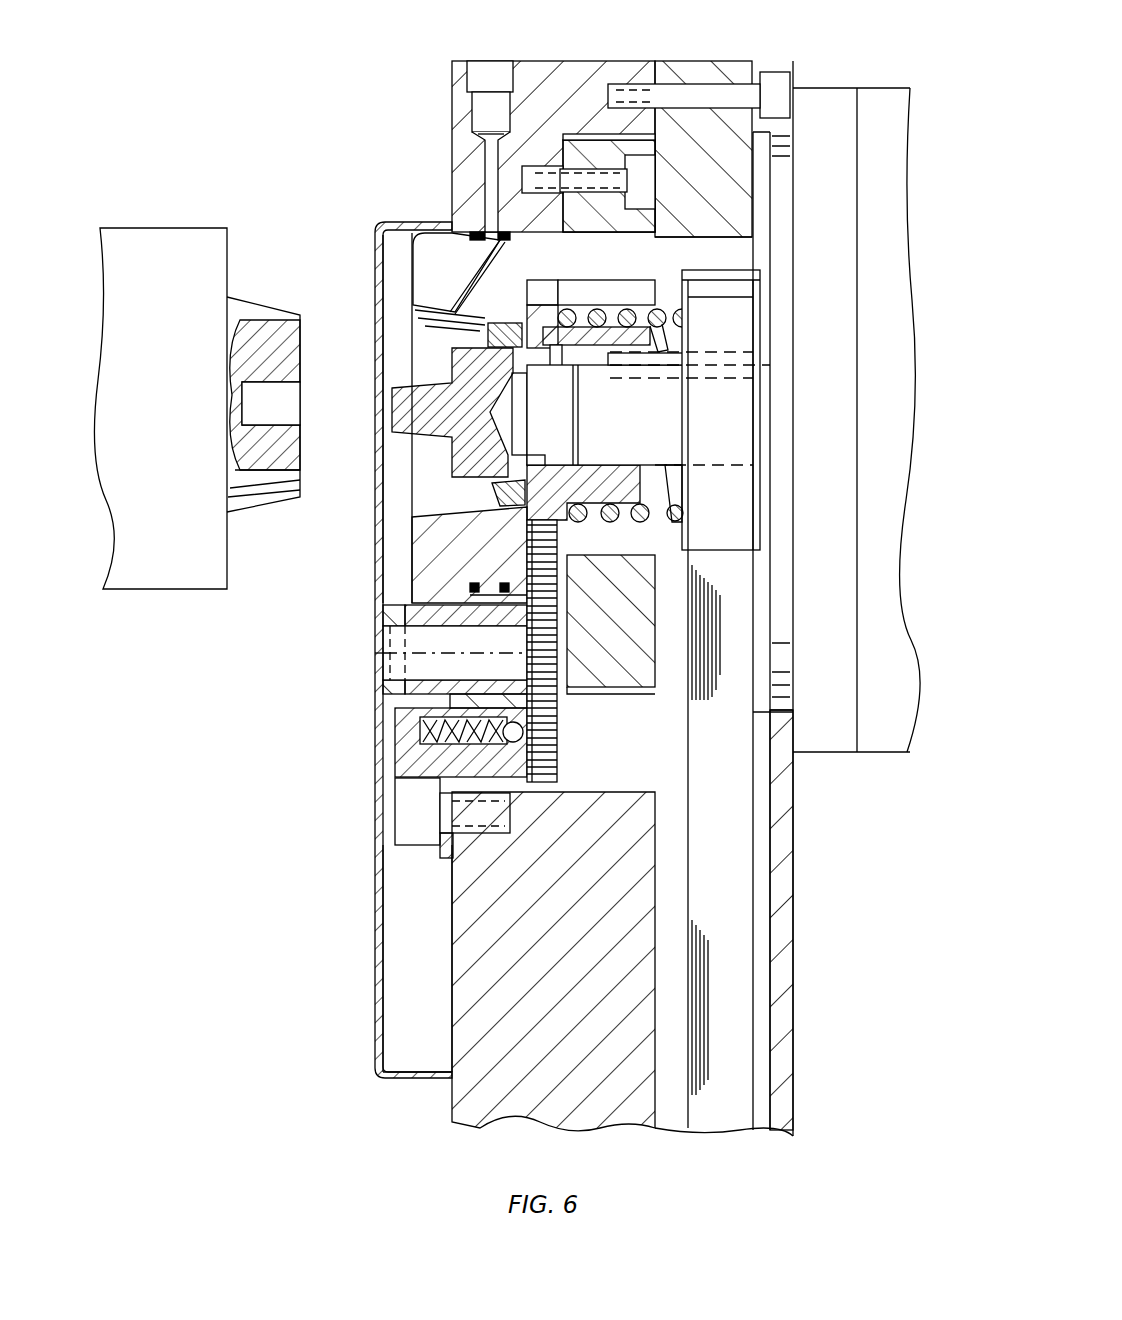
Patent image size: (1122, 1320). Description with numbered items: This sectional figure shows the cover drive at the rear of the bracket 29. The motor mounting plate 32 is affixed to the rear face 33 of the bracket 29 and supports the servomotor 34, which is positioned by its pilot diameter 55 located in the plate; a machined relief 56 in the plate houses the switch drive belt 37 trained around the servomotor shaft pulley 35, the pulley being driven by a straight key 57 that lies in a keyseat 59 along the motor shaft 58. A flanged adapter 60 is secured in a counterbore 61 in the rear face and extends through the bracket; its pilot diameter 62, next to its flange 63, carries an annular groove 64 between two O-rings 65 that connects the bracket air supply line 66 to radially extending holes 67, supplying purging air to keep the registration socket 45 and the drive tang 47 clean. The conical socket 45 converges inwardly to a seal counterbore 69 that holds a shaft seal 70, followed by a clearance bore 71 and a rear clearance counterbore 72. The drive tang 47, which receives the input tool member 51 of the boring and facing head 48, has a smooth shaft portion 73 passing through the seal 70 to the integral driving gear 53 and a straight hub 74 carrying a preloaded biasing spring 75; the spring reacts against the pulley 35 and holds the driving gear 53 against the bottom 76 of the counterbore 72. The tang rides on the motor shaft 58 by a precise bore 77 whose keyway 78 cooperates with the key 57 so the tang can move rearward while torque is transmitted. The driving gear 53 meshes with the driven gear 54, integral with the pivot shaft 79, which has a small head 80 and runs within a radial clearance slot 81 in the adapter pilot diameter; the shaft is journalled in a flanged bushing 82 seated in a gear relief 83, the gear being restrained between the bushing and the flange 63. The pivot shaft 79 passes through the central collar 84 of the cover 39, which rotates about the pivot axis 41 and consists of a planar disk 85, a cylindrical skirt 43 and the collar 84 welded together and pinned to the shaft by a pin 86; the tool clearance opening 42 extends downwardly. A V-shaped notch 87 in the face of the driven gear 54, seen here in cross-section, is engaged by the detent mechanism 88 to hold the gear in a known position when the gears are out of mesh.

The bracket 29 is at (553, 61).
The motor mounting plate 32 is at (740, 62).
The rear face 33 is at (655, 78).
The servomotor 34 is at (880, 88).
The servomotor shaft pulley 35 is at (760, 562).
The switch drive belt 37 is at (760, 894).
The cover 39 is at (375, 1005).
The pivot axis 41 is at (383, 660).
The tool clearance opening 42 is at (383, 920).
The skirt 43 is at (405, 1080).
The registration socket 45 is at (440, 318).
The drive tang 47 is at (392, 443).
The boring and facing head 48 is at (170, 608).
The input tool member 51 is at (282, 310).
The driving gear 53 is at (558, 282).
The driven gear 54 is at (558, 755).
The pilot diameter 55 is at (780, 712).
The machined relief 56 is at (768, 825).
The straight key 57 is at (657, 352).
The motor shaft 58 is at (683, 486).
The keyseat 59 is at (650, 380).
The flanged adapter 60 is at (668, 251).
The counterbore 61 is at (645, 144).
The pilot diameter 62 is at (505, 240).
The flange 63 is at (600, 134).
The annular groove 64 is at (485, 218).
The O-rings 65 is at (472, 238).
The bracket air supply line 66 is at (485, 148).
The radially extending holes 67 is at (468, 270).
The seal counterbore 69 is at (487, 333).
The shaft seal 70 is at (500, 508).
The clearance bore 71 is at (540, 460).
The rear clearance counterbore 72 is at (568, 310).
The smooth shaft portion 73 is at (490, 487).
The hub 74 is at (598, 522).
The biasing spring 75 is at (608, 312).
The bottom 76 is at (527, 292).
The bore 77 is at (530, 468).
The keyway 78 is at (555, 367).
The pivot shaft 79 is at (385, 616).
The small head 80 is at (565, 690).
The radial clearance slot 81 is at (503, 582).
The flanged bushing 82 is at (498, 627).
The gear relief 83 is at (595, 792).
The central collar 84 is at (405, 612).
The disk 85 is at (383, 540).
The pin 86 is at (392, 635).
The V-shaped notch 87 is at (525, 650).
The detent mechanism 88 is at (395, 756).